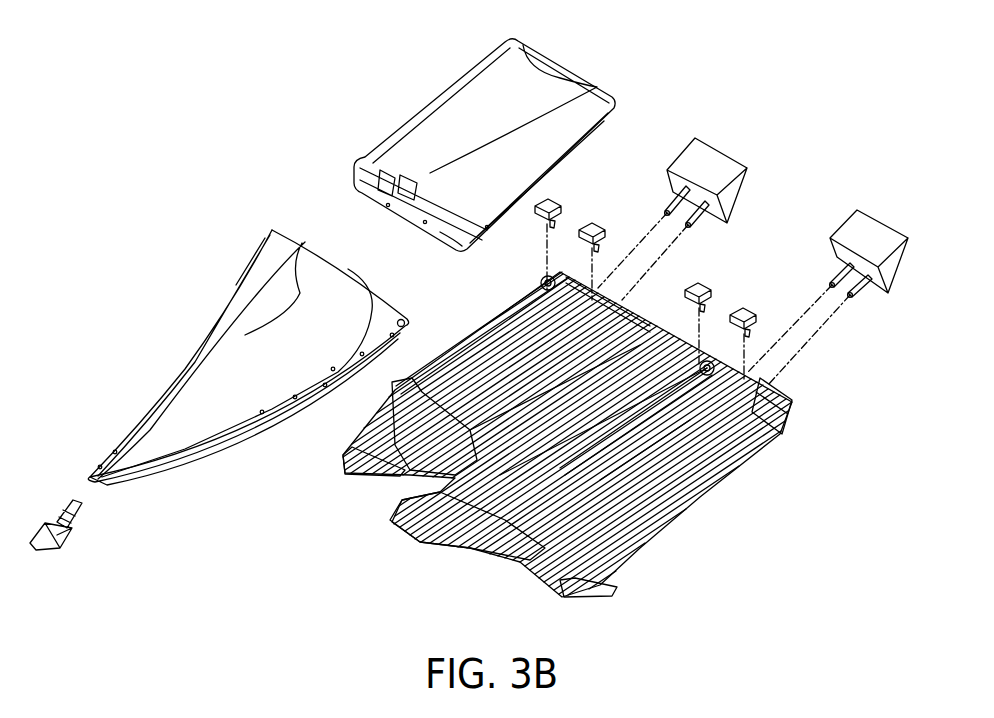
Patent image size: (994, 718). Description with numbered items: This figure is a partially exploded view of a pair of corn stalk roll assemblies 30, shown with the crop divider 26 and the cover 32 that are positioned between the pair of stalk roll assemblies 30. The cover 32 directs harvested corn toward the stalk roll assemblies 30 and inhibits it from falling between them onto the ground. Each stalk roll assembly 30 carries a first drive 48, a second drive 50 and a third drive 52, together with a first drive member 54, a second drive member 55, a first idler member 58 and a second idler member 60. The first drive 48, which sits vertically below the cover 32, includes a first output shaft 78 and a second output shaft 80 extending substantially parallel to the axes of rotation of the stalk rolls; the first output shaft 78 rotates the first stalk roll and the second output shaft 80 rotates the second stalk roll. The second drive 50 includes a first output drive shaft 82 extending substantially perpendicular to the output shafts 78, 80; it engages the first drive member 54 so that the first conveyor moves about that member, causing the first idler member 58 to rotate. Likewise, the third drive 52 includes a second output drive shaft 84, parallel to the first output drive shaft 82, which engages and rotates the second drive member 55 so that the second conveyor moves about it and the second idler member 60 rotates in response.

The crop divider 26 is at (197, 367).
The stalk roll assembly 30 is at (348, 504).
The cover 32 is at (528, 72).
The first drive 48 is at (740, 187).
The second drive 50 is at (591, 224).
The third drive 52 is at (547, 200).
The first drive member 54 is at (611, 295).
The second drive member 55 is at (523, 296).
The first idler member 58 is at (430, 470).
The second idler member 60 is at (387, 428).
The first output shaft 78 is at (692, 192).
The second output shaft 80 is at (673, 203).
The first output drive shaft 82 is at (597, 247).
The second output drive shaft 84 is at (553, 221).